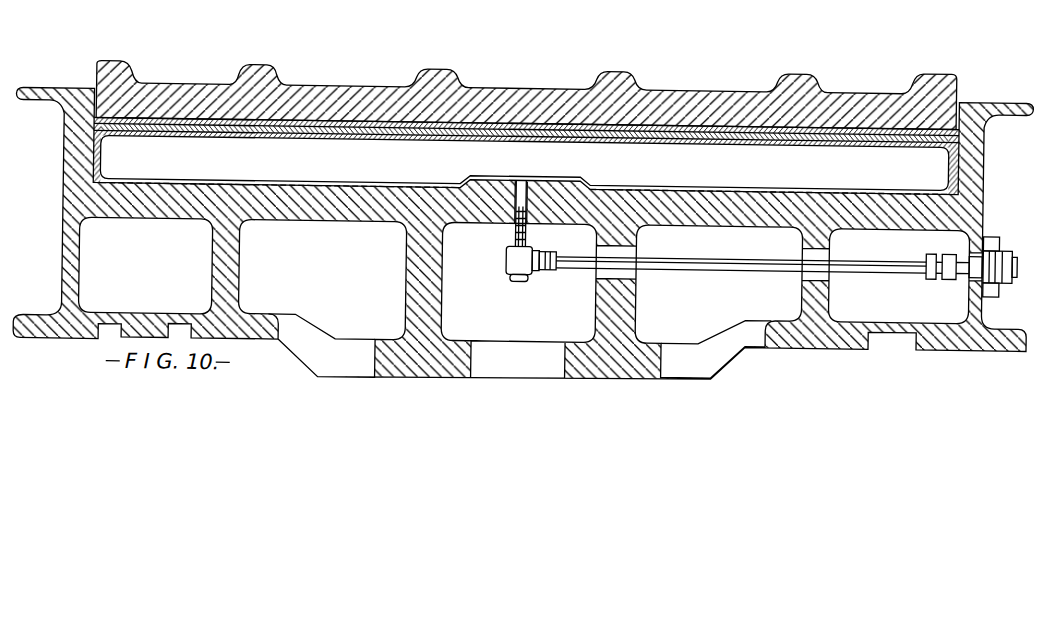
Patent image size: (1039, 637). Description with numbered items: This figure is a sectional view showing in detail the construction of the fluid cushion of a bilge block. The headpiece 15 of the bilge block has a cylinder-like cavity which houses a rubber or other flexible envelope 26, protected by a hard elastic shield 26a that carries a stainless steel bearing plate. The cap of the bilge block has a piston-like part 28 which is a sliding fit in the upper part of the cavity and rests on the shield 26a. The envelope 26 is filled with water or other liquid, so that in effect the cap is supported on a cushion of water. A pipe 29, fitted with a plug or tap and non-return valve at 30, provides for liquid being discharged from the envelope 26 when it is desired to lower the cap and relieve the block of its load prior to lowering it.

The headpiece 15 is at (72, 250).
The envelope 26 is at (492, 127).
The shield 26a is at (310, 124).
The piston-like part 28 is at (178, 105).
The pipe 29 is at (508, 241).
The plug or tap and non-return valve 30 is at (1000, 245).